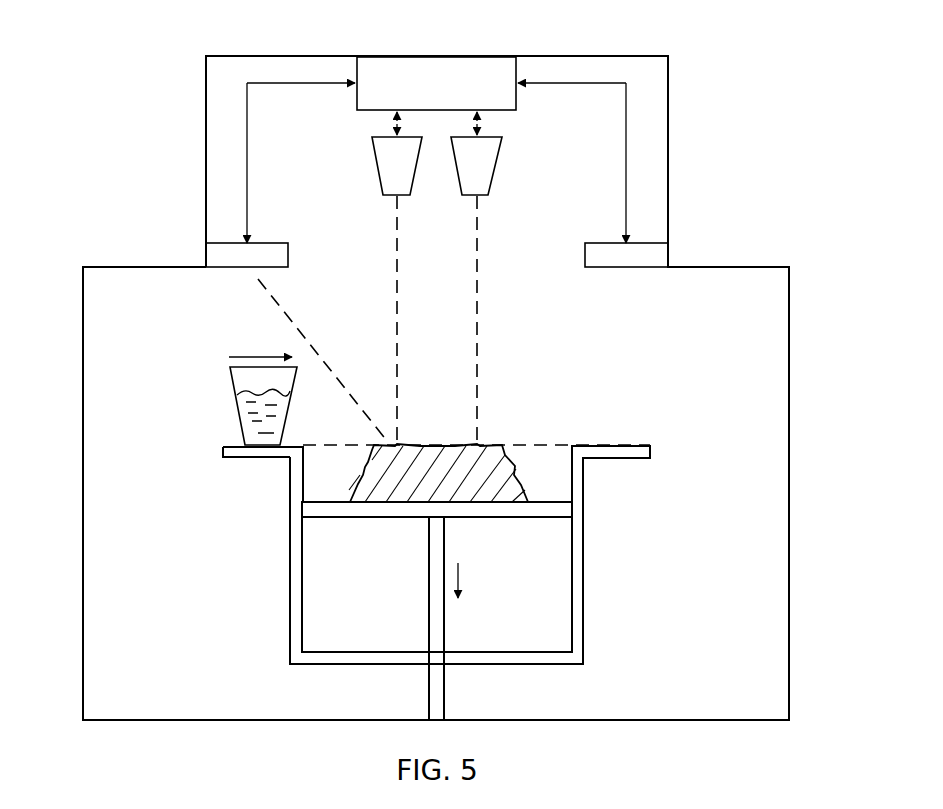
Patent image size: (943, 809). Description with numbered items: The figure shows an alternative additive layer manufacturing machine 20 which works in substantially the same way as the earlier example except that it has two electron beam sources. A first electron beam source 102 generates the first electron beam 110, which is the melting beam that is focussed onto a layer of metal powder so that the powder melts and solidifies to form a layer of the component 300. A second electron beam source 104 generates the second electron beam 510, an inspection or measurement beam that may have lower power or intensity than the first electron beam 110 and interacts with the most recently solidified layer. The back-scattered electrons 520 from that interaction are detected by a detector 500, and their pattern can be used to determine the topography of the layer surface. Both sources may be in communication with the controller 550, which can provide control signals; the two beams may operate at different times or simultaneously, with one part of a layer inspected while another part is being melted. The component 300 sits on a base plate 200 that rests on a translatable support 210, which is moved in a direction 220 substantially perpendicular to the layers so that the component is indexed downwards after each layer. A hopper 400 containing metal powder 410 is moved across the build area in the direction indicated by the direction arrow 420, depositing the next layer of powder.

The ALM machine 20 is at (737, 138).
The controller 550 is at (462, 78).
The second electron beam source 104 is at (397, 162).
The first electron beam source 102 is at (477, 163).
The second electron beam 510 is at (397, 295).
The first electron beam 110 is at (477, 313).
The detector 500 is at (217, 262).
The back-scattered electrons 520 is at (255, 280).
The hopper 400 is at (230, 378).
The metal powder 410 is at (242, 417).
The direction arrow 420 is at (263, 353).
The base plate 200 is at (520, 510).
The translatable support 210 is at (435, 646).
The direction 220 is at (484, 580).
The component 300 is at (485, 473).